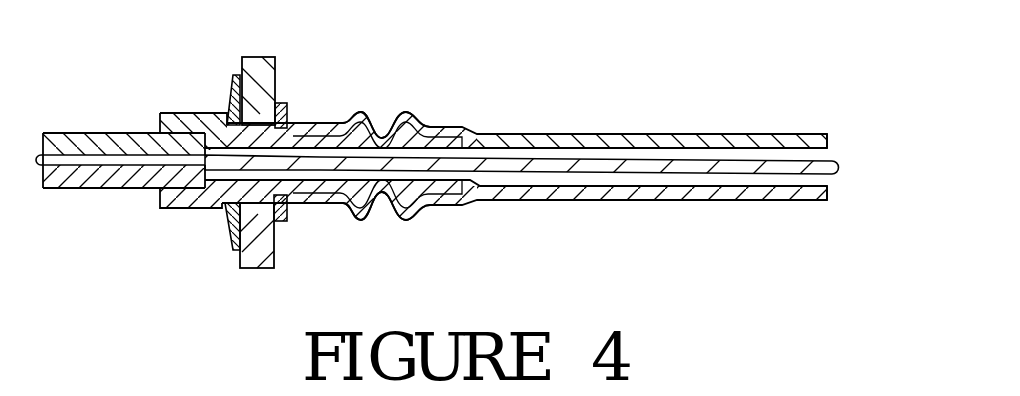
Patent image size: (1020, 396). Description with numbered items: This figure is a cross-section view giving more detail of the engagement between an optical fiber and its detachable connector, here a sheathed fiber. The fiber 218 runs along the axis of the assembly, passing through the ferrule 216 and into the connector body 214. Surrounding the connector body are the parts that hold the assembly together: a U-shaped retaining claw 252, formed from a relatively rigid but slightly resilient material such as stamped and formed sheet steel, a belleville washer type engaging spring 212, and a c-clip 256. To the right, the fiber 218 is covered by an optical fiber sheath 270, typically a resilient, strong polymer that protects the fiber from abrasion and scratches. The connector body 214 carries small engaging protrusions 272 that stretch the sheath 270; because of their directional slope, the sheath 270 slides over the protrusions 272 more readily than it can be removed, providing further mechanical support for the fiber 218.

The belleville washer type engaging spring 212 is at (230, 98).
The connector body 214 is at (208, 195).
The ferrule 216 is at (117, 181).
The fiber 218 is at (839, 168).
The U-shaped retaining claw 252 is at (258, 72).
The c-clip 256 is at (285, 105).
The optical fiber sheath 270 is at (535, 138).
The small engaging protrusions 272 is at (410, 192).